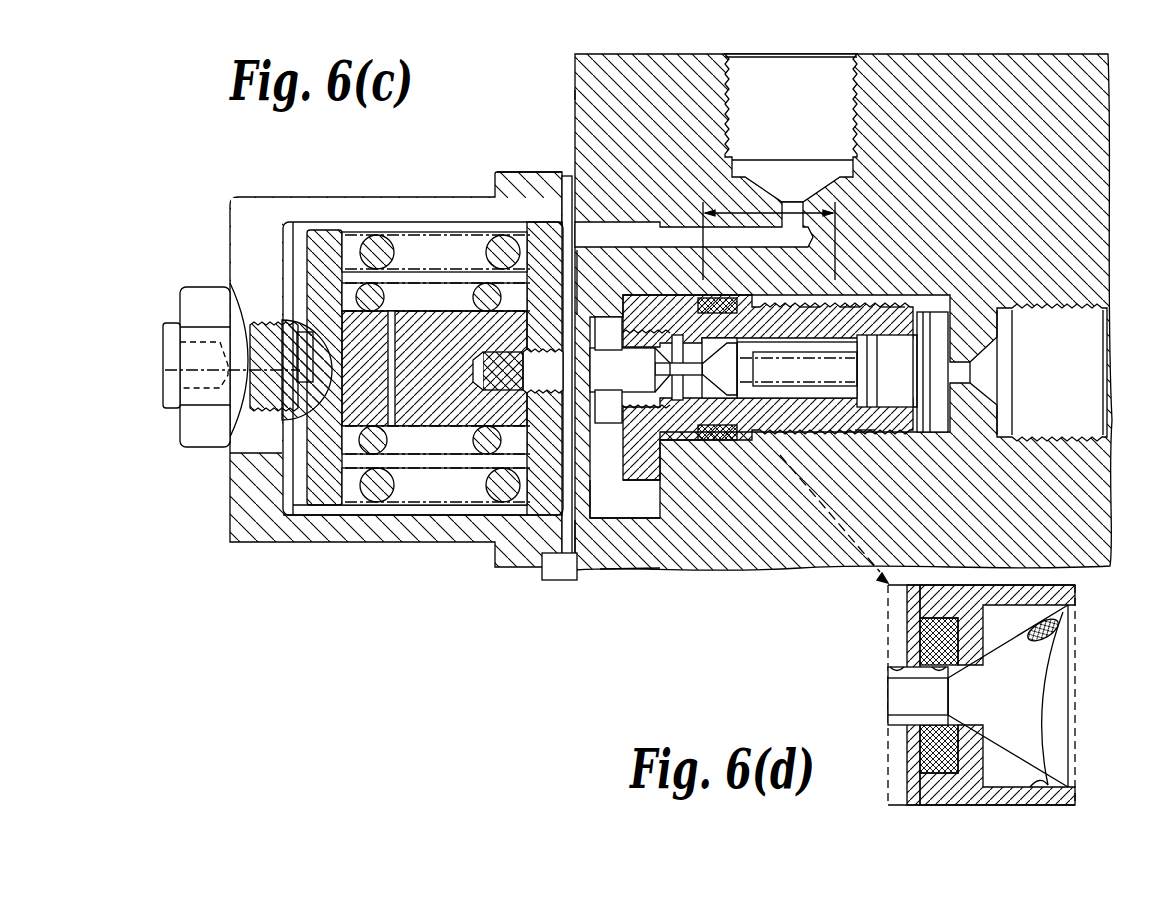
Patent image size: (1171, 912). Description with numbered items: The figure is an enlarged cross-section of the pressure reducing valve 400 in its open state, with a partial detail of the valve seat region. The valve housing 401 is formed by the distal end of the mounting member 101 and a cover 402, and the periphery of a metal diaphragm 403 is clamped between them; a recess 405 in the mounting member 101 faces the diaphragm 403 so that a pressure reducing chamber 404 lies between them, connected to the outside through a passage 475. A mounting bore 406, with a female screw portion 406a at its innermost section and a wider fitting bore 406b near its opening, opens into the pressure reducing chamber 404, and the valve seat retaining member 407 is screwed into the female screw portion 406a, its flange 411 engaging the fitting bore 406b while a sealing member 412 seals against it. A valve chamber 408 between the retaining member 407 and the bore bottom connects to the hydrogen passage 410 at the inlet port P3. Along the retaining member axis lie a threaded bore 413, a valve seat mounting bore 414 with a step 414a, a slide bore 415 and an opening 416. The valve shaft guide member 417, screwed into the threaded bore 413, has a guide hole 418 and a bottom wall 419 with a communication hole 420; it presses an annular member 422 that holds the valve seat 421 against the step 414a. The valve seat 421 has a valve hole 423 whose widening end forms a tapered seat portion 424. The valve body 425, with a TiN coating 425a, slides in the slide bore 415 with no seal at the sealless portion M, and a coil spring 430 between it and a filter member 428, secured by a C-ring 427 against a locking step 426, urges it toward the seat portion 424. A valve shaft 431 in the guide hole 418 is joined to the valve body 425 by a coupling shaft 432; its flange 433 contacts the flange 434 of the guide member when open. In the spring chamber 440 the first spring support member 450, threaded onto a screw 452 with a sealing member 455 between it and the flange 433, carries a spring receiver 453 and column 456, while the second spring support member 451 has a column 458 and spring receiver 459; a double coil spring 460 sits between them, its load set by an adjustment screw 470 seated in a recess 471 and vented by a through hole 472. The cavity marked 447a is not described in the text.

In FIG. 6C, the pressure reducing valve 400 is at (568, 80).
In FIG. 6C, the valve housing 401 is at (505, 85).
In FIG. 6C, the mounting member 101 is at (575, 95).
In FIG. 6C, the cover 402 is at (533, 172).
In FIG. 6C, the metal diaphragm 403 is at (590, 518).
In FIG. 6C, the pressure reducing chamber 404 is at (610, 222).
In FIG. 6C, the recess 405 is at (625, 570).
In FIG. 6C, the mounting bore 406 is at (833, 450).
In FIG. 6C, the female screw portion 406a is at (903, 440).
In FIG. 6C, the fitting bore 406b is at (700, 440).
In FIG. 6C, the valve seat retaining member 407 is at (852, 307).
In FIG. 6C, the valve chamber 408 is at (935, 312).
In FIG. 6C, the passage 410 is at (1055, 315).
In FIG. 6C, the flange 411 is at (625, 498).
In FIG. 6C, the sealing member 412 is at (727, 298).
In FIG. 6C, the threaded bore 413 is at (652, 335).
In FIG. 6D, the valve seat mounting bore 414 is at (955, 752).
In FIG. 6D, the step 414a is at (920, 632).
In FIG. 6C, the slide bore 415 is at (778, 398).
In FIG. 6D, the slide bore 415 is at (1045, 780).
In FIG. 6C, the opening 416 is at (895, 398).
In FIG. 6C, the valve shaft guide member 417 is at (638, 410).
In FIG. 6C, the guide hole 418 is at (612, 330).
In FIG. 6C, the bottom wall 419 is at (655, 372).
In FIG. 6D, the communication hole 420 is at (897, 670).
In FIG. 6C, the valve seat 421 is at (735, 345).
In FIG. 6D, the valve seat 421 is at (960, 740).
In FIG. 6D, the annular member 422 is at (908, 753).
In FIG. 6D, the valve hole 423 is at (950, 692).
In FIG. 6D, the tapered seat portion 424 is at (962, 672).
In FIG. 6C, the valve body 425 is at (795, 430).
In FIG. 6D, the valve body 425 is at (1040, 682).
In FIG. 6D, the coating 425a is at (1062, 630).
In FIG. 6C, the locking step 426 is at (866, 432).
In FIG. 6C, the C-ring 427 is at (920, 345).
In FIG. 6C, the filter member 428 is at (885, 312).
In FIG. 6C, the coil spring 430 is at (805, 307).
In FIG. 6C, the valve shaft 431 is at (608, 415).
In FIG. 6D, the coupling shaft 432 is at (905, 692).
In FIG. 6C, the flange 433 is at (565, 240).
In FIG. 6C, the flange 434 is at (600, 465).
In FIG. 6C, the spring chamber 440 is at (362, 222).
In FIG. 6C, the passage 447a is at (598, 290).
In FIG. 6C, the first spring support member 450 is at (460, 423).
In FIG. 6C, the second spring support member 451 is at (320, 515).
In FIG. 6C, the screw 452 is at (530, 355).
In FIG. 6C, the spring receiver 453 is at (537, 505).
In FIG. 6C, the sealing member 455 is at (542, 368).
In FIG. 6C, the column 456 is at (457, 317).
In FIG. 6C, the column 458 is at (393, 316).
In FIG. 6C, the spring receiver 459 is at (315, 230).
In FIG. 6C, the double coil spring 460 is at (386, 297).
In FIG. 6C, the adjustment screw 470 is at (196, 445).
In FIG. 6C, the recess 471 is at (318, 418).
In FIG. 6C, the through hole 472 is at (265, 325).
In FIG. 6C, the passage 475 is at (728, 100).
In FIG. 6C, the sealless portion M is at (769, 228).
In FIG. 6C, the port P3 is at (985, 385).